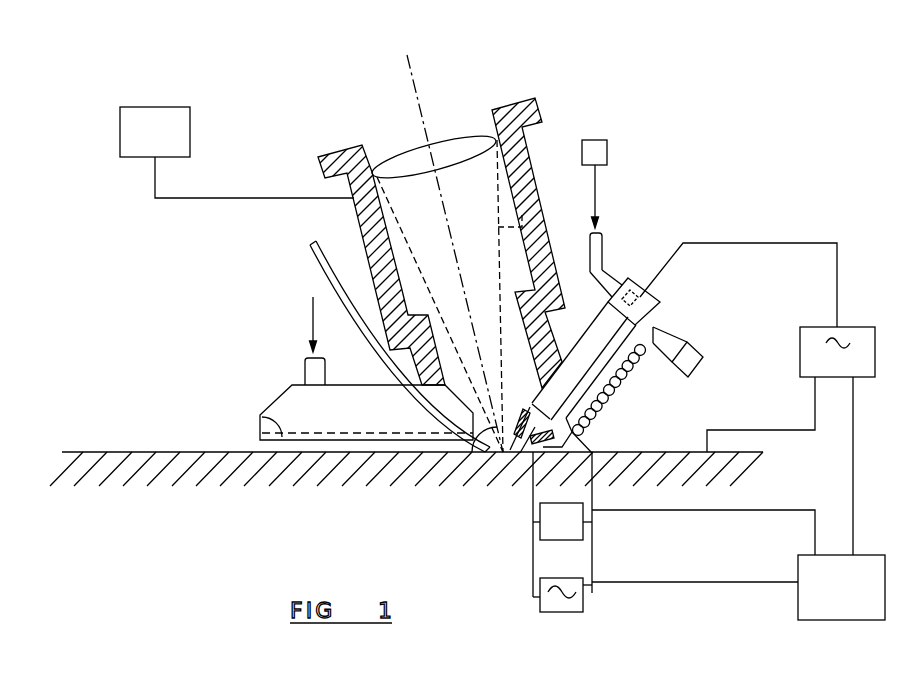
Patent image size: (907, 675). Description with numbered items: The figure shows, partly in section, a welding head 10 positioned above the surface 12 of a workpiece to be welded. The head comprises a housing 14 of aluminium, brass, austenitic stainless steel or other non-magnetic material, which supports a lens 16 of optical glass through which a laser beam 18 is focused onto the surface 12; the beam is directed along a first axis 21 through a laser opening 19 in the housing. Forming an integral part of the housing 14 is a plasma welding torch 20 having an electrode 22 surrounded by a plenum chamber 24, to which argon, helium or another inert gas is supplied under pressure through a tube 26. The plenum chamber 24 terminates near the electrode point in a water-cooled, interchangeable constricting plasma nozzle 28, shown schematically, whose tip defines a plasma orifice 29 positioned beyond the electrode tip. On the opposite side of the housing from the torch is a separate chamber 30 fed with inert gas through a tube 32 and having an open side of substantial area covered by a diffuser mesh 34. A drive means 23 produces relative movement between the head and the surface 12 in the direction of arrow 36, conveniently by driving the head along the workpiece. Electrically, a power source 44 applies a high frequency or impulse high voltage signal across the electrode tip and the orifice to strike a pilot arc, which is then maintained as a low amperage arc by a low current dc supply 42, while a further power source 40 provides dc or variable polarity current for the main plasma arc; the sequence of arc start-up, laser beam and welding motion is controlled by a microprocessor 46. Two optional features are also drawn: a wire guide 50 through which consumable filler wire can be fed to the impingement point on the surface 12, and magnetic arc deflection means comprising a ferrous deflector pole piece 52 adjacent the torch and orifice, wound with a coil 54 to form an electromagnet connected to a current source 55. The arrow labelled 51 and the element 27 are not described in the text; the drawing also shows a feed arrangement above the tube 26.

The welding head 10 is at (550, 141).
The surface 12 is at (122, 452).
The housing 14 is at (530, 100).
The lens 16 is at (457, 143).
The laser beam 18 is at (522, 215).
The laser opening 19 is at (478, 452).
The plasma welding torch 20 is at (664, 316).
The first axis 21 is at (455, 253).
The electrode 22 is at (628, 280).
The drive means 23 is at (237, 152).
The plenum chamber 24 is at (614, 298).
The tube 26 is at (603, 247).
The wire feed drive 27 is at (607, 152).
The constricting plasma nozzle 28 is at (503, 452).
The plasma orifice 29 is at (520, 452).
The separate chamber 30 is at (290, 400).
The tube 32 is at (303, 360).
The diffuser mesh 34 is at (260, 415).
The arrow 36 is at (222, 500).
The electrical power source 40 is at (791, 441).
The low current dc supply 42 is at (562, 524).
The electrical power source 44 is at (562, 595).
The microprocessor 46 is at (738, 565).
The wire guide 50 is at (317, 268).
The current direction 51 is at (600, 438).
The deflector pole piece 52 is at (628, 380).
The coil 54 is at (610, 405).
The current source 55 is at (705, 360).